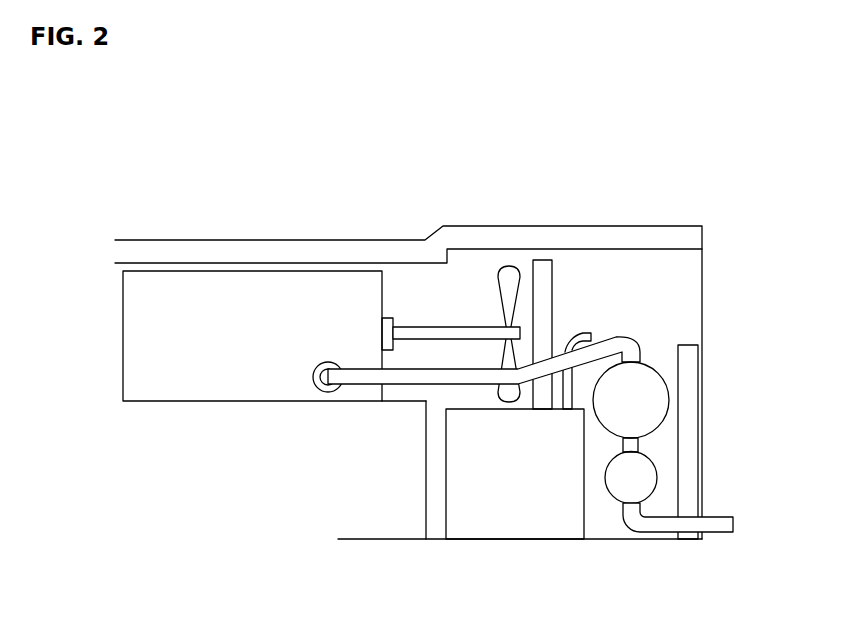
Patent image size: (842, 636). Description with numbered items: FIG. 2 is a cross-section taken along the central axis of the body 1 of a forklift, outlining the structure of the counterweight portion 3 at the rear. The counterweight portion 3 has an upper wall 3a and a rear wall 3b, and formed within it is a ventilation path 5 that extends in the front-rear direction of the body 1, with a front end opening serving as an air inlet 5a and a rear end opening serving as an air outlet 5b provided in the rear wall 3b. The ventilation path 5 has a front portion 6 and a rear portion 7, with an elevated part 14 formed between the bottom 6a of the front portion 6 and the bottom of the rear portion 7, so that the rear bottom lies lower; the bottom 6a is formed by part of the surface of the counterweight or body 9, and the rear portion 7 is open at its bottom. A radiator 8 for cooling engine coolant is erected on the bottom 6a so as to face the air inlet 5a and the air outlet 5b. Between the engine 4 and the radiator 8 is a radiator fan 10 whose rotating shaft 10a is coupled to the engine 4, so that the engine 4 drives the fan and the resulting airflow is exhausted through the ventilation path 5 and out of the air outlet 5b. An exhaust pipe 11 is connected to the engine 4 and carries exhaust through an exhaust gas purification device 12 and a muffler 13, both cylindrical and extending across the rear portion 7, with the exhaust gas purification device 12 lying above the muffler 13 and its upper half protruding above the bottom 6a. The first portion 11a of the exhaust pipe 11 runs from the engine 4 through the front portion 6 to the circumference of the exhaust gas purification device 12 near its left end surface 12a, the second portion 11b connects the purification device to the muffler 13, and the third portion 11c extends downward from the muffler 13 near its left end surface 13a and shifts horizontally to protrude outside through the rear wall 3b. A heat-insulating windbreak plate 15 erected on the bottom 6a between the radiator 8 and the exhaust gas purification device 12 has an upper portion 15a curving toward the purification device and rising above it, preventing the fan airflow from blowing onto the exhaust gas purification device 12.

The body 1 is at (368, 522).
The counterweight portion 3 is at (592, 240).
The upper wall 3a is at (672, 235).
The rear wall 3b is at (690, 463).
The engine 4 is at (275, 297).
The ventilation path 5 is at (636, 275).
The air inlet 5a is at (428, 290).
The air outlet 5b is at (703, 290).
The front portion 6 is at (470, 278).
The bottom 6a is at (464, 405).
The rear portion 7 is at (668, 283).
The radiator 8 is at (541, 265).
The counterweight or body 9 is at (507, 517).
The radiator fan 10 is at (508, 272).
The rotating shaft 10a is at (478, 334).
The exhaust pipe 11 is at (537, 453).
The first portion 11a is at (357, 386).
The second portion 11b is at (640, 443).
The third portion 11c is at (665, 523).
The exhaust gas purification device 12 is at (688, 392).
The left end surface 12a is at (648, 385).
The muffler 13 is at (690, 521).
The left end surface 13a is at (618, 488).
The elevated part 14 is at (585, 513).
The windbreak plate 15 is at (568, 390).
The upper portion 15a is at (585, 330).